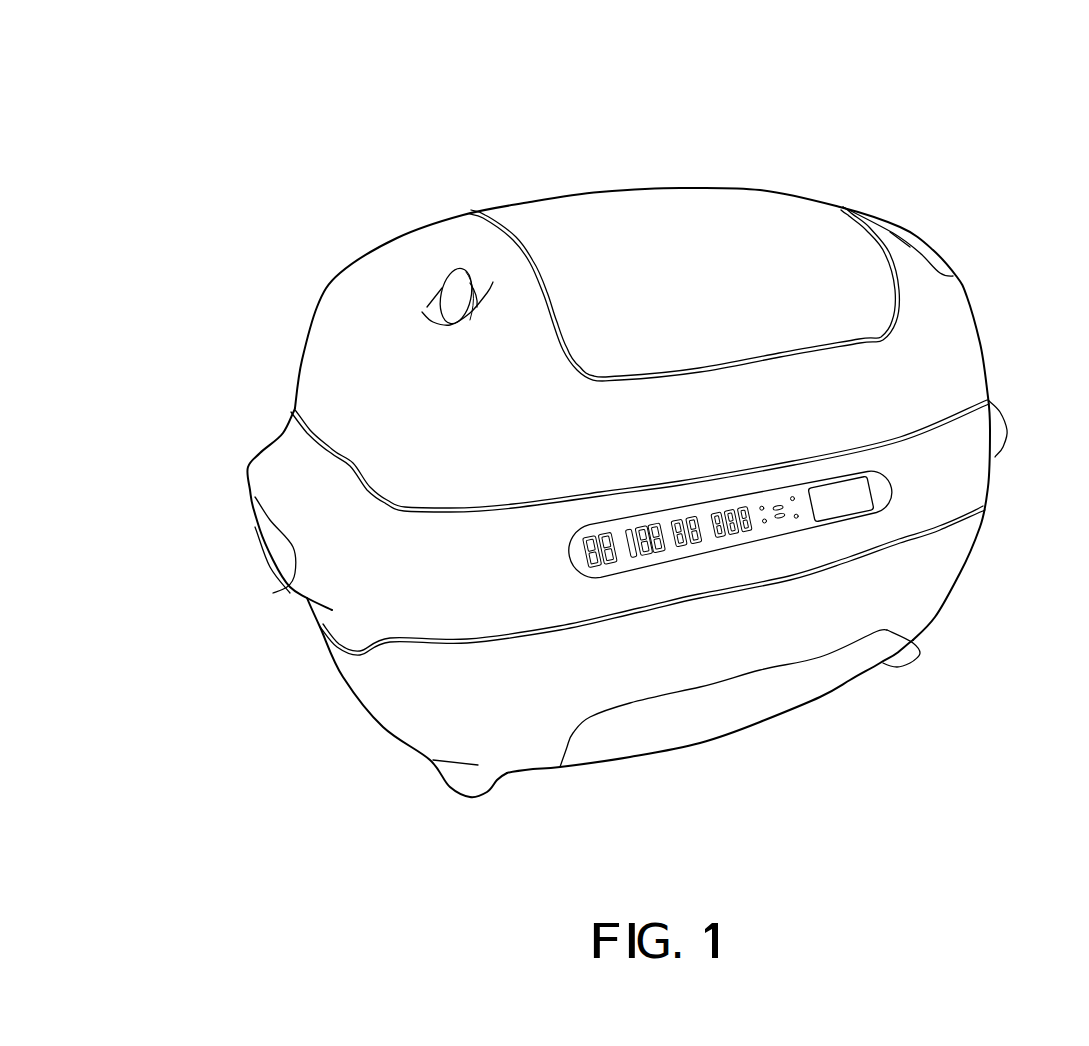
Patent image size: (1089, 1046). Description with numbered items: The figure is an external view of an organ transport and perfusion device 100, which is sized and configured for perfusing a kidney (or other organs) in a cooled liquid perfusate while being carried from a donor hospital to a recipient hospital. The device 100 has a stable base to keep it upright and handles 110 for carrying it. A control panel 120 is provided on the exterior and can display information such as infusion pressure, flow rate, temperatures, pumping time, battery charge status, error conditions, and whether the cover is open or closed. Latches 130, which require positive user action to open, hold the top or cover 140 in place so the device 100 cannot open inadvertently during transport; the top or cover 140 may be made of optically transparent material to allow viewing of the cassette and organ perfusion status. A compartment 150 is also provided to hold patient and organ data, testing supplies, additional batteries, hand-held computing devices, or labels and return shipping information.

The organ transport and perfusion device 100 is at (610, 123).
The handles 110 is at (260, 523).
The control panel 120 is at (780, 527).
The latches 130 is at (440, 277).
The top or cover 140 is at (333, 330).
The compartment 150 is at (573, 233).